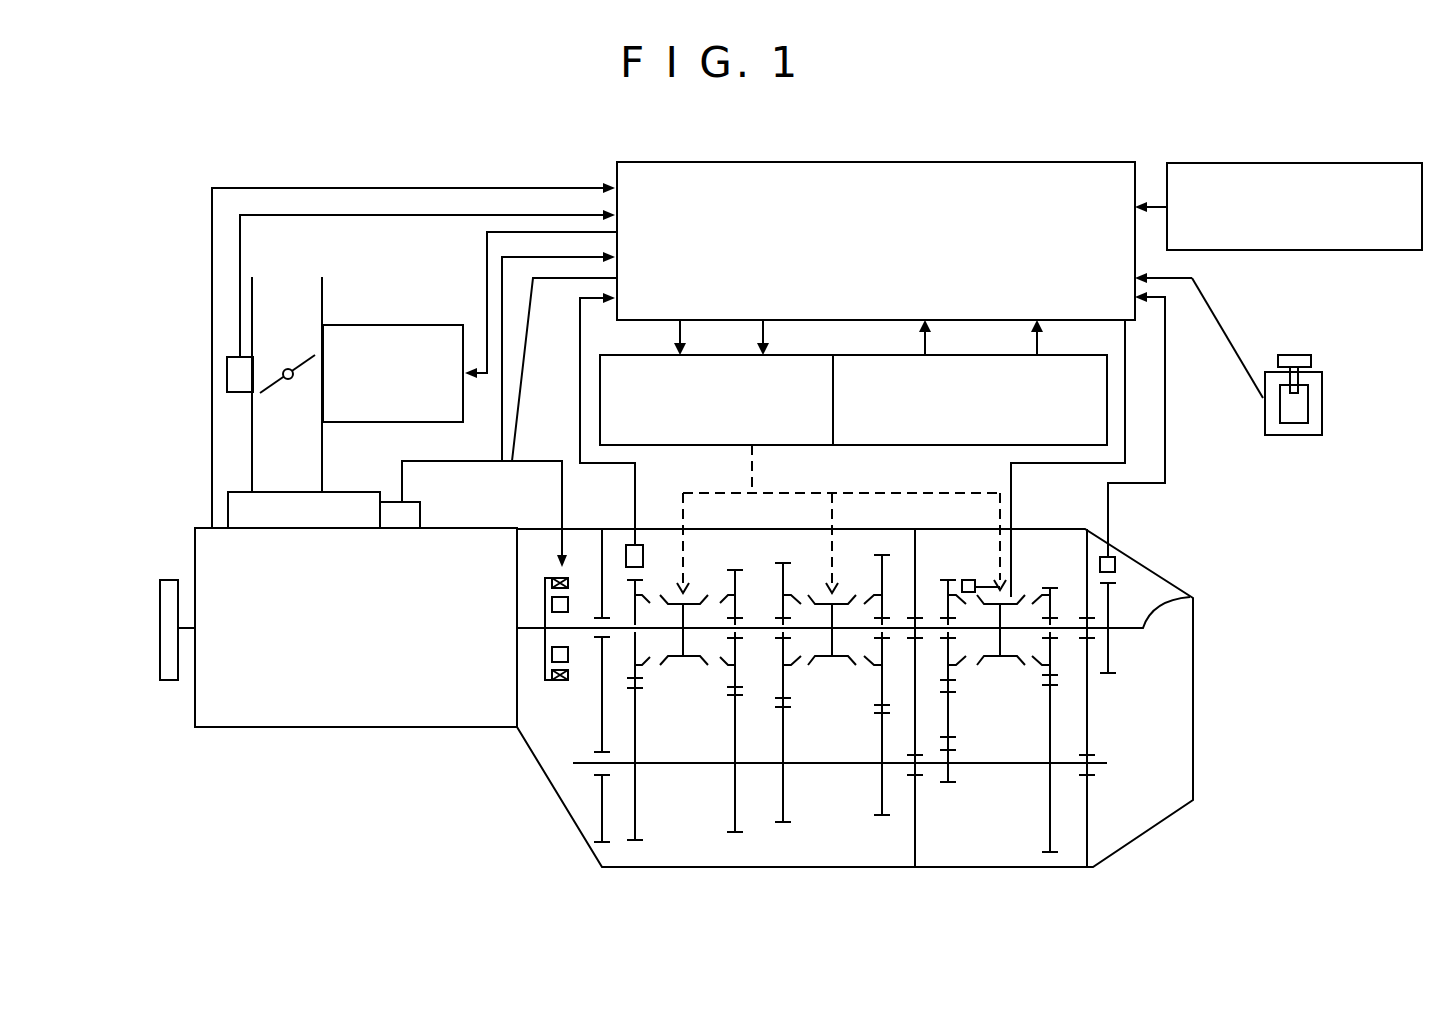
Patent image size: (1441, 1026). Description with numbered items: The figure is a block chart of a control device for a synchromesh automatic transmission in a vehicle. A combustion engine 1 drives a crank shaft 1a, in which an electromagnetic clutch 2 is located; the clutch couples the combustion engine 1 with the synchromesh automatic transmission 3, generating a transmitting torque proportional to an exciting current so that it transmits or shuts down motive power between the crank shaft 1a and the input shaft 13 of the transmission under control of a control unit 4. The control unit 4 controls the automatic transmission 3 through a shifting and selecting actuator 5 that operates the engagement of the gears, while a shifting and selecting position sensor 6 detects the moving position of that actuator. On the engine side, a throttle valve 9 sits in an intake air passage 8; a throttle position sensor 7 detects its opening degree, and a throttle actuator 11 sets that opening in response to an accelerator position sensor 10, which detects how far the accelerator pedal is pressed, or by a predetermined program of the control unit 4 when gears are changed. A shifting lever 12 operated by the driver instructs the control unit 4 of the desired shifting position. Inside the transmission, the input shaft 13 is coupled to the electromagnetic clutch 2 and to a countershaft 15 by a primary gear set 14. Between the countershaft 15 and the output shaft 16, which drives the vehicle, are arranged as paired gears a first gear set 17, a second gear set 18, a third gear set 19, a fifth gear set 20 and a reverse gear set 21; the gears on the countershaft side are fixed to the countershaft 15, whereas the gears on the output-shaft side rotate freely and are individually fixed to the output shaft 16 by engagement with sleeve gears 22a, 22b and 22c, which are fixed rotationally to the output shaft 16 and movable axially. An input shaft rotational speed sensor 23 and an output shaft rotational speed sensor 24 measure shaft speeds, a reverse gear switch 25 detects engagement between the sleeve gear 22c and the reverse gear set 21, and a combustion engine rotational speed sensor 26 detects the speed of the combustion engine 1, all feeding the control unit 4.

The combustion engine 1 is at (340, 728).
The crank shaft 1a is at (520, 625).
The electromagnetic clutch 2 is at (557, 682).
The synchromesh automatic transmission 3 is at (943, 870).
The control unit 4 is at (952, 161).
The shifting and selecting actuator 5 is at (598, 385).
The shifting and selecting position sensor 6 is at (1107, 400).
The throttle position sensor 7 is at (227, 357).
The intake air passage 8 is at (322, 303).
The throttle valve 9 is at (290, 381).
The accelerator position sensor 10 is at (1222, 162).
The throttle actuator 11 is at (430, 325).
The shifting lever 12 is at (1322, 425).
The input shaft 13 is at (580, 623).
The primary gear set 14 is at (636, 672).
The countershaft 15 is at (677, 765).
The output shaft 16 is at (1190, 597).
The first gear set 17 is at (880, 745).
The second gear set 18 is at (786, 688).
The third gear set 19 is at (735, 732).
The fifth gear set 20 is at (1047, 670).
The reverse gear set 21 is at (955, 720).
The sleeve gear 22a is at (700, 600).
The sleeve gear 22b is at (820, 600).
The sleeve gear 22c is at (1017, 597).
The input shaft rotational speed sensor 23 is at (643, 550).
The output shaft rotational speed sensor 24 is at (1113, 560).
The reverse gear switch 25 is at (960, 580).
The combustion engine rotational speed sensor 26 is at (422, 512).